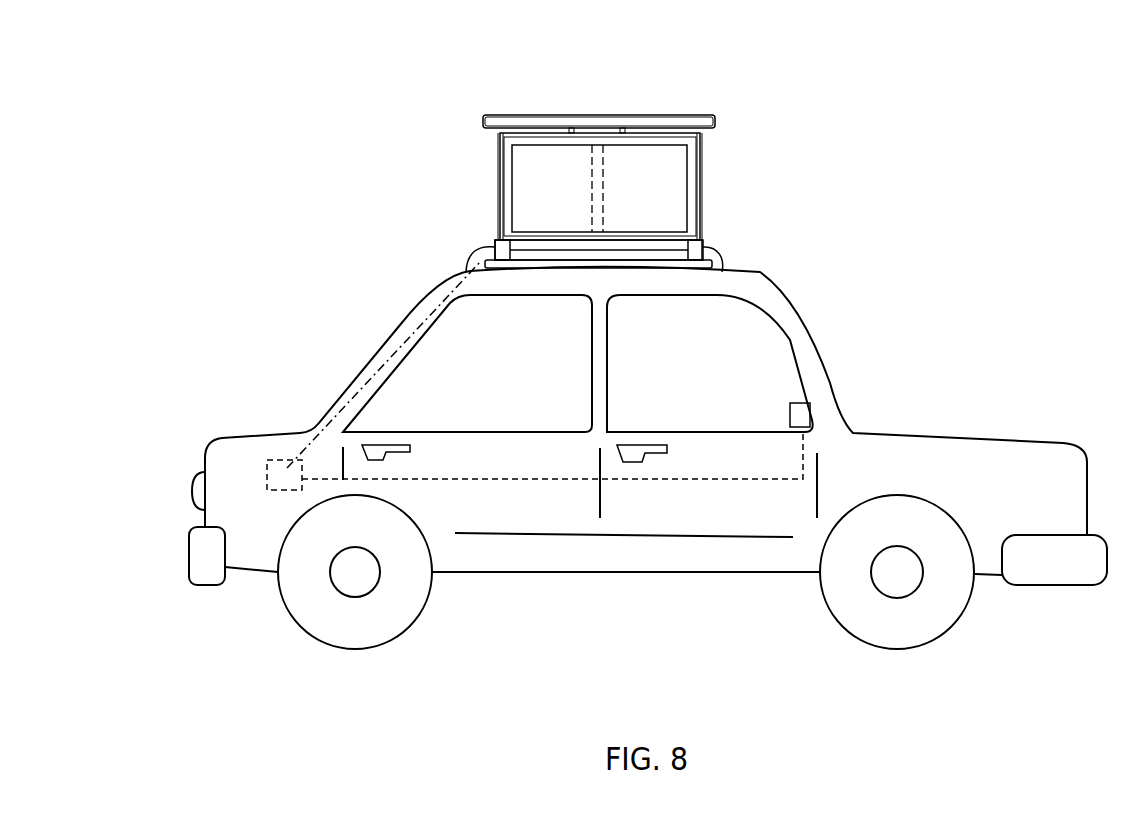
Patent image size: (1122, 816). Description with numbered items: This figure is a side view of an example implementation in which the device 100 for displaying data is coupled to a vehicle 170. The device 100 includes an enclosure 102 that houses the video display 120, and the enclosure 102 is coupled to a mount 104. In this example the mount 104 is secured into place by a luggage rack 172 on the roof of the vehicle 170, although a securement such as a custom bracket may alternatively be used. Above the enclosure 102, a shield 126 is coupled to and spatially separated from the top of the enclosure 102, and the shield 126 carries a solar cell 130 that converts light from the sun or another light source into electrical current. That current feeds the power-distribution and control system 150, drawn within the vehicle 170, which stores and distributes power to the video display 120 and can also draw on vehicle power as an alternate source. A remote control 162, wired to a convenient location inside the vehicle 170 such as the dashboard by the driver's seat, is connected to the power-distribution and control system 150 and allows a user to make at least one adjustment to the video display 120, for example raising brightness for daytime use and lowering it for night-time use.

The device 100 is at (748, 108).
The enclosure 102 is at (728, 170).
The mount 104 is at (478, 247).
The video display 120 is at (527, 195).
The shield 126 is at (483, 122).
The solar cell 130 is at (566, 112).
The power-distribution and control system 150 is at (287, 471).
The remote control 162 is at (790, 405).
The vehicle 170 is at (228, 240).
The luggage rack 172 is at (718, 263).